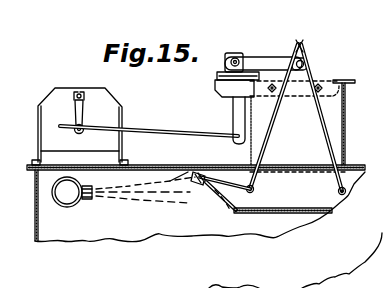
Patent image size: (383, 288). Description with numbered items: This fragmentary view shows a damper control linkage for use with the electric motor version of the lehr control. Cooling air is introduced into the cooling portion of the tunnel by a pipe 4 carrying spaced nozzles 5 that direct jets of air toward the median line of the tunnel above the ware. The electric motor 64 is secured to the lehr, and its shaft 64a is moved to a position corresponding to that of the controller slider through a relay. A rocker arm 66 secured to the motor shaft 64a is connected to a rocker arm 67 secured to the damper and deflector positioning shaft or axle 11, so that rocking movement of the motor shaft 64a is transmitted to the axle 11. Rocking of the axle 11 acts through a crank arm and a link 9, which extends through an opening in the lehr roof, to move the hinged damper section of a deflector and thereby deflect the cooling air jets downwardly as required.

The pipe 4 is at (65, 207).
The nozzle 5 is at (87, 200).
The link 9 is at (320, 128).
The axle 11 is at (219, 69).
The electric motor 64 is at (110, 97).
The motor shaft 64a is at (75, 97).
The rocker arm 66 is at (85, 118).
The rocker arm 67 is at (232, 117).